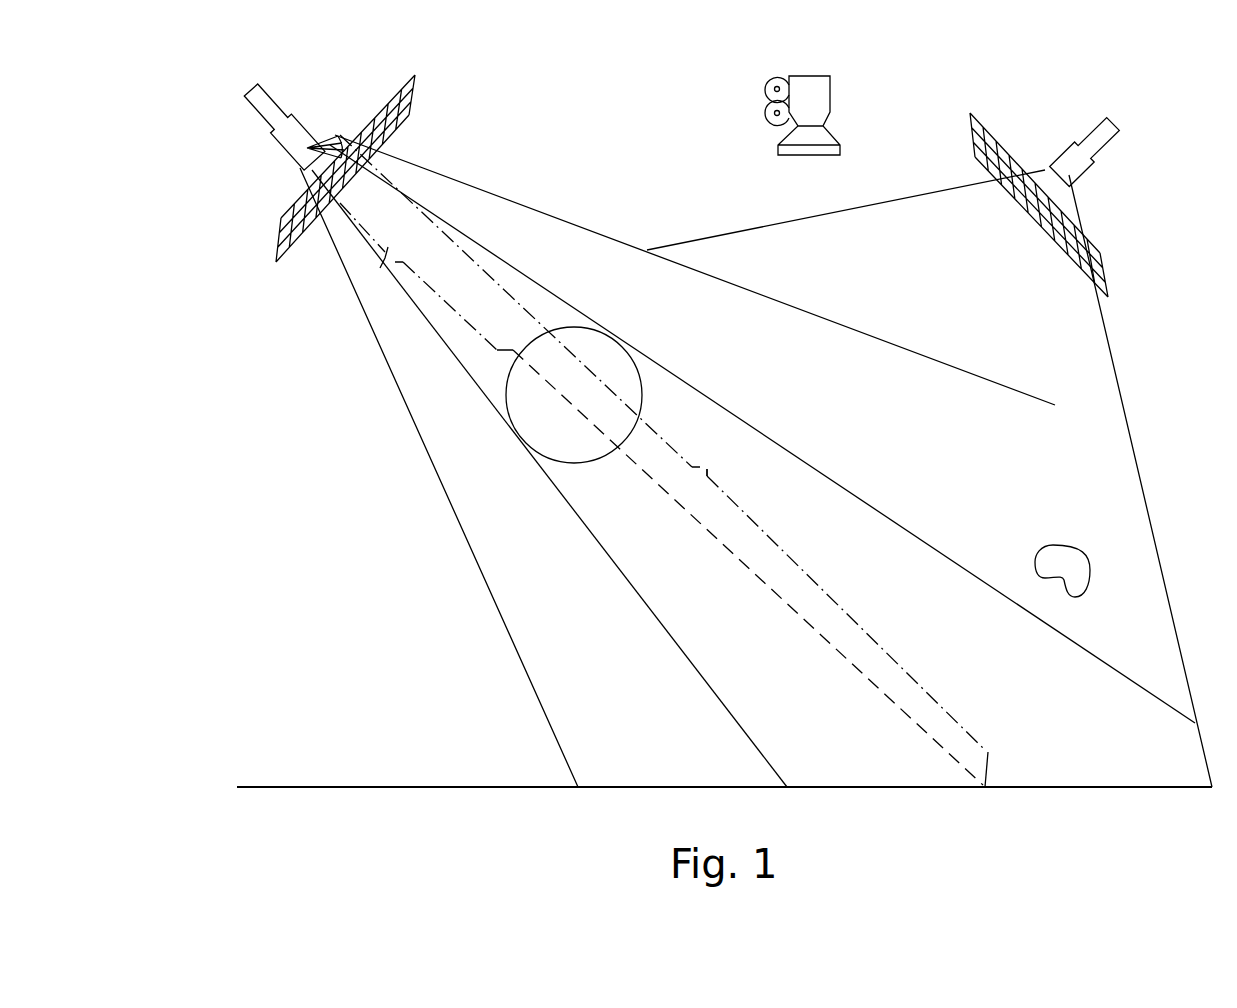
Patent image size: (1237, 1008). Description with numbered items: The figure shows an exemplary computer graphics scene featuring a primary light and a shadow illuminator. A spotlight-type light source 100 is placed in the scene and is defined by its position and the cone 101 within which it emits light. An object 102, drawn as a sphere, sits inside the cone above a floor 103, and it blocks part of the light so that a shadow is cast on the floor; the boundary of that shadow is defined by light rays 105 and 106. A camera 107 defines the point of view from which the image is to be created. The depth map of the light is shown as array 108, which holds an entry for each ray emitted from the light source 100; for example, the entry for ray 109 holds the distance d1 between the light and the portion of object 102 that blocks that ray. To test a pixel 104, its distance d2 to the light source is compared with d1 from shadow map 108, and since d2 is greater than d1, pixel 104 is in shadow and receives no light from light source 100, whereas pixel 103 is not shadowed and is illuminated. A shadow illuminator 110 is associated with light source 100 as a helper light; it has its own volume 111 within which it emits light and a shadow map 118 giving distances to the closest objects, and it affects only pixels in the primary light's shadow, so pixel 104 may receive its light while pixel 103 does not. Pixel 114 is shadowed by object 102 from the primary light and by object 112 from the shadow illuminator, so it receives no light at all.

The light source 100 is at (277, 140).
The cone 101 is at (538, 206).
The object 102 is at (620, 342).
The floor 103 is at (618, 787).
The pixel 104 is at (987, 788).
The light ray 105 is at (667, 632).
The light ray 106 is at (900, 520).
The camera 107 is at (832, 82).
The array 108 is at (412, 113).
The ray 109 is at (465, 293).
The shadow illuminator 110 is at (1106, 143).
The volume 111 is at (893, 198).
The object 112 is at (1073, 548).
The pixel 114 is at (1080, 790).
The shadow map 118 is at (1104, 268).
The distance d1 is at (376, 274).
The distance d2 is at (722, 461).